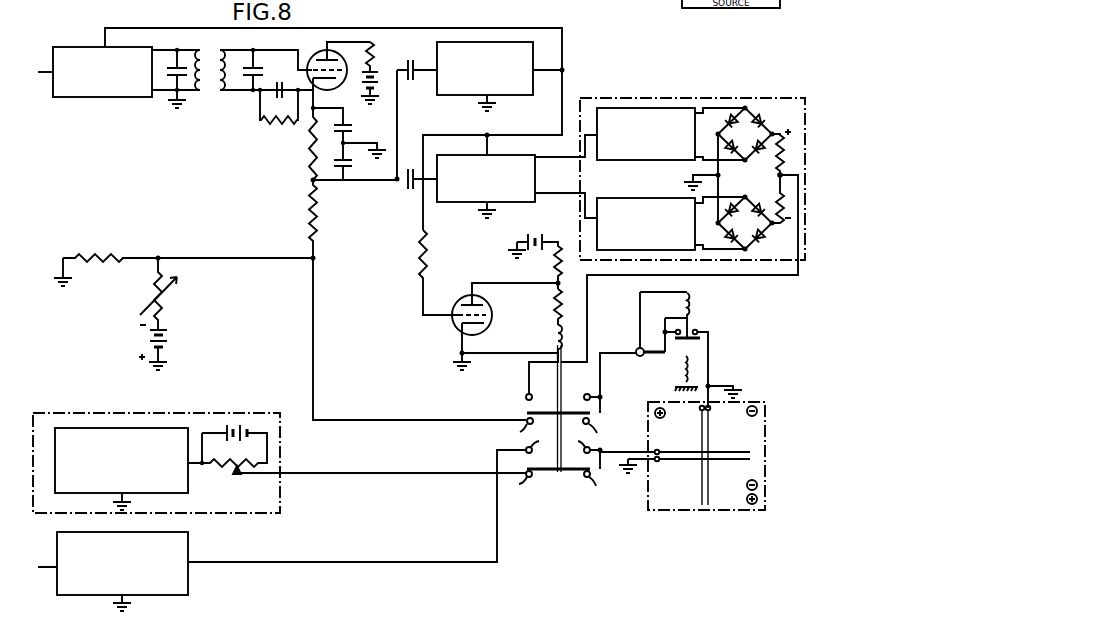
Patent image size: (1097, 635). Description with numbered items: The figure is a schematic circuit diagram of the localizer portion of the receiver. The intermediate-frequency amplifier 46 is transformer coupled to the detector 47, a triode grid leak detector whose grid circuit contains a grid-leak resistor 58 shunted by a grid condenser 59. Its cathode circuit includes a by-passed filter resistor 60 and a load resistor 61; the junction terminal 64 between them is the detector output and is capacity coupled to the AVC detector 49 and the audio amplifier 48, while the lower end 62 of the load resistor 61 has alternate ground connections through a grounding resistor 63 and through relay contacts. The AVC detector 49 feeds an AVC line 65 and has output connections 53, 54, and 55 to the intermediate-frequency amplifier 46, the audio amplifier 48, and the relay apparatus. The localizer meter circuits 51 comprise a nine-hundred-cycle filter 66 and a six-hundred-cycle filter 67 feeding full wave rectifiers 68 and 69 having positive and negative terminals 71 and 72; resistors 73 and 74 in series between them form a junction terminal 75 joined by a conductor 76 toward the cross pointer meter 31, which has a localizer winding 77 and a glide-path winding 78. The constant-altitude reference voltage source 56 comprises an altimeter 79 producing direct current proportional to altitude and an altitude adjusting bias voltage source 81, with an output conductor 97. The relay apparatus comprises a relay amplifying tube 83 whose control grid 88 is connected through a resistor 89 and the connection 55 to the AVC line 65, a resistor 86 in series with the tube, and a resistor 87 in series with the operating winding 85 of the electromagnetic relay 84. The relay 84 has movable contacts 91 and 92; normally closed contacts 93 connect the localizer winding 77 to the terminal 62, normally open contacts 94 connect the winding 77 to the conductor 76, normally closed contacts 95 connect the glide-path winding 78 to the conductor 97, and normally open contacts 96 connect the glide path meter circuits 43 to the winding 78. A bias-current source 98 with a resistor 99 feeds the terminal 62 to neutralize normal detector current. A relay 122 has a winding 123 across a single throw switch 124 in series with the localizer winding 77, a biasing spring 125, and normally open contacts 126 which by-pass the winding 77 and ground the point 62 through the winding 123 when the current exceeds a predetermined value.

The cross pointer meter 31 is at (752, 404).
The glide path meter circuits 43 is at (182, 550).
The intermediate-frequency amplifier 46 is at (82, 47).
The detector 47 is at (319, 50).
The audio amplifier 48 is at (535, 191).
The AVC detector 49 is at (440, 86).
The localizer meter circuits 51 is at (589, 102).
The output connection 53 is at (422, 27).
The output connection 54 is at (541, 134).
The output connection 55 is at (457, 134).
The constant-altitude reference voltage source 56 is at (251, 421).
The grid-leak resistor 58 is at (263, 120).
The grid condenser 59 is at (281, 80).
The by-passed filter resistor 60 is at (311, 140).
The load resistor 61 is at (310, 222).
The lower end terminal of load resistor 62 is at (315, 258).
The grounding resistor 63 is at (92, 257).
The junction terminal 64 is at (311, 181).
The AVC line 65 is at (551, 70).
The 900-cycle filter 66 is at (632, 108).
The 600-cycle filter 67 is at (631, 198).
The full wave rectifier 68 is at (749, 108).
The full wave rectifier 69 is at (748, 187).
The positive terminal 71 is at (779, 134).
The negative terminal 72 is at (773, 226).
The resistor 73 is at (729, 178).
The resistor 74 is at (772, 199).
The junction terminal 75 is at (778, 176).
The conductor 76 is at (770, 278).
The localizer winding 77 is at (710, 466).
The glide-path winding 78 is at (693, 460).
The altimeter 79 is at (183, 488).
The altitude adjusting bias voltage source 81 is at (232, 423).
The relay amplifying tube 83 is at (463, 300).
The electromagnetic relay 84 is at (594, 385).
The operating winding 85 is at (553, 338).
The resistor 86 is at (555, 262).
The resistor 87 is at (554, 305).
The control grid 88 is at (458, 316).
The resistor 89 is at (421, 252).
The movable contact 91 is at (555, 411).
The movable contact 92 is at (541, 475).
The normally closed stationary contacts 93 is at (562, 430).
The normally open stationary contacts 94 is at (526, 398).
The normally closed stationary contacts 95 is at (562, 482).
The normally open stationary contacts 96 is at (638, 450).
The output conductor 97 is at (346, 475).
The bias-current source 98 is at (167, 341).
The resistor 99 is at (163, 304).
The relay 122 is at (742, 299).
The relay winding 123 is at (695, 310).
The single throw switch 124 is at (657, 358).
The biasing spring 125 is at (693, 372).
The normally open contacts 126 is at (699, 331).